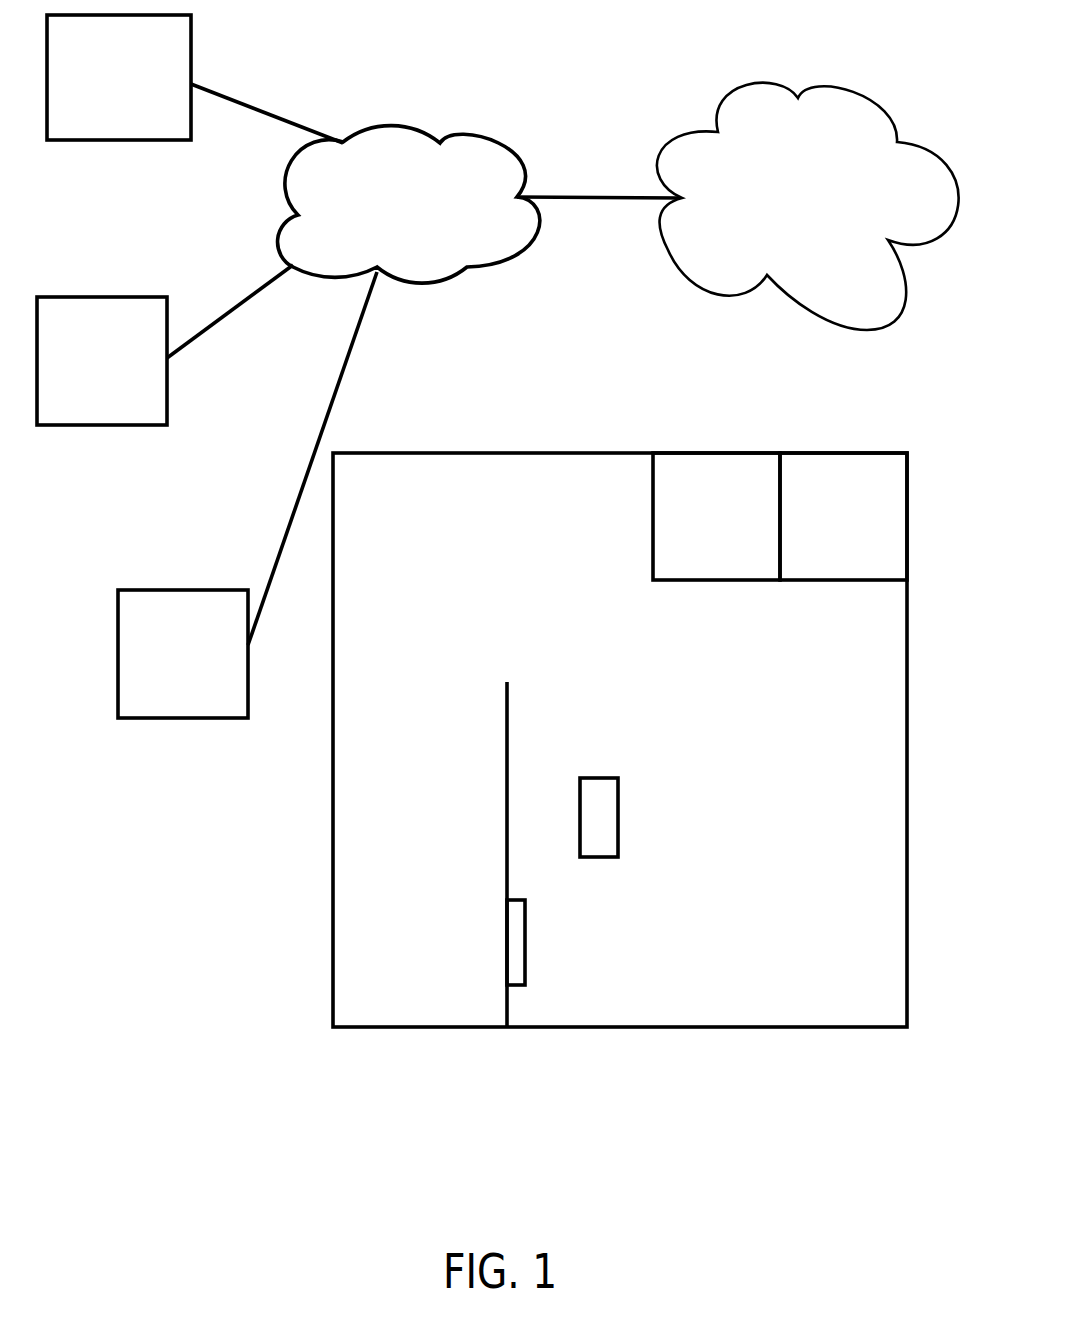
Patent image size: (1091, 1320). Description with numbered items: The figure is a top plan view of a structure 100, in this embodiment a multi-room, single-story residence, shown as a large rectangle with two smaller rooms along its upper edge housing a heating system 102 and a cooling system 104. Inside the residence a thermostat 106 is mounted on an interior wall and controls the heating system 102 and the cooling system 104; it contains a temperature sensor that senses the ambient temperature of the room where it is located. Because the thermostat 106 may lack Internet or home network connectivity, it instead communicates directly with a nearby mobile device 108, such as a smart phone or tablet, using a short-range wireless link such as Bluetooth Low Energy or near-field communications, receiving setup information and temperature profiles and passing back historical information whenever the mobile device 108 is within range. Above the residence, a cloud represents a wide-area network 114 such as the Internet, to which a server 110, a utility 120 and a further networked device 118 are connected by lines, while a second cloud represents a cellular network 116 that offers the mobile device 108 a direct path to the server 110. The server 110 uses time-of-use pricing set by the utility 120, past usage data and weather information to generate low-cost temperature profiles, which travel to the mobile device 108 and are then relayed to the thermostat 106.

The structure 100 is at (840, 1028).
The heating system 102 is at (675, 451).
The cooling system 104 is at (812, 451).
The thermostat 106 is at (525, 922).
The mobile device 108 is at (603, 777).
The server 110 is at (81, 372).
The wide-area network 114 is at (380, 211).
The cellular network 116 is at (808, 206).
The user device 118 is at (152, 666).
The utility 120 is at (96, 81).